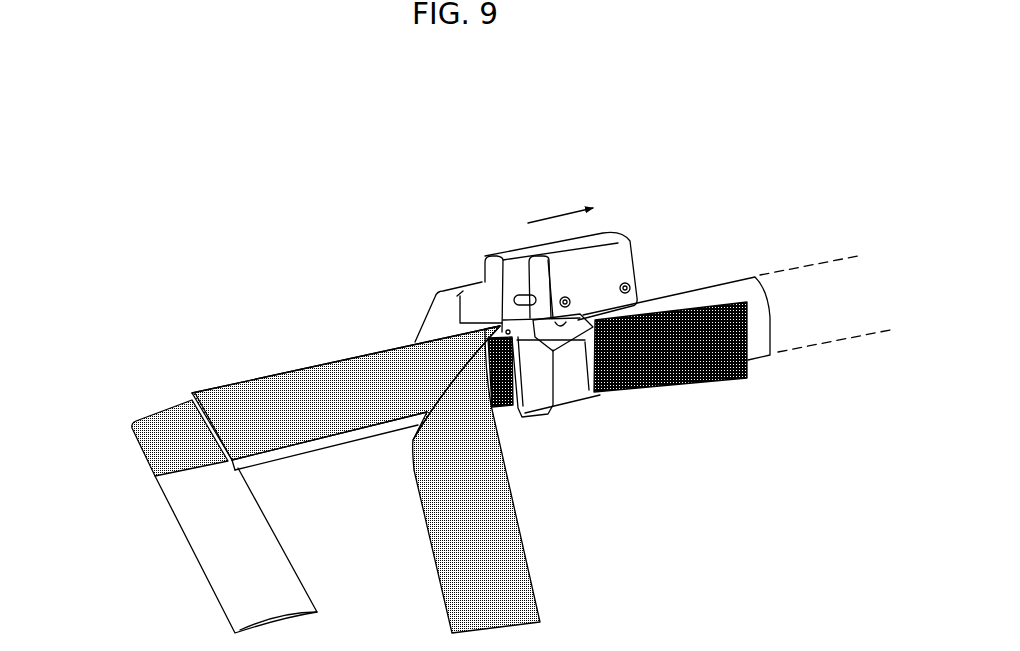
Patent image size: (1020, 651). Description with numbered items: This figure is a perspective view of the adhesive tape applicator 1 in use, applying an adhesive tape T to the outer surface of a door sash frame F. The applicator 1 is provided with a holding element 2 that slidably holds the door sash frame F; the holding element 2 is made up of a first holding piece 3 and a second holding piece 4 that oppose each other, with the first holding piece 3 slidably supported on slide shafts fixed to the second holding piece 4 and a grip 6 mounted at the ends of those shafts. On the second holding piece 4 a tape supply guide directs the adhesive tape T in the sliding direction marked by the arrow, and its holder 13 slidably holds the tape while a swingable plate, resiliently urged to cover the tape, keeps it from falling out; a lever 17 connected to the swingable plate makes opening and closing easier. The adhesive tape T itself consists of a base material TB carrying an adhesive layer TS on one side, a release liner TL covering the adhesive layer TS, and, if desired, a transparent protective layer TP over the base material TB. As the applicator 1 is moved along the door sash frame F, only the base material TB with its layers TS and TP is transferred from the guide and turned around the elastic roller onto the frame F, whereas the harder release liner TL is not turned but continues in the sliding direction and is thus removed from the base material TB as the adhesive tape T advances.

The adhesive tape applicator 1 is at (561, 308).
The holding element 2 is at (511, 196).
The first holding piece 3 is at (497, 250).
The second holding piece 4 is at (421, 318).
The grip 6 is at (615, 257).
The holder 13 is at (543, 390).
The lever 17 is at (570, 350).
The door sash frame F is at (693, 320).
The adhesive tape T is at (418, 452).
The release liner TL is at (748, 367).
The adhesive layer TS is at (336, 443).
The base material TB is at (336, 443).
The protective layer TP is at (297, 400).